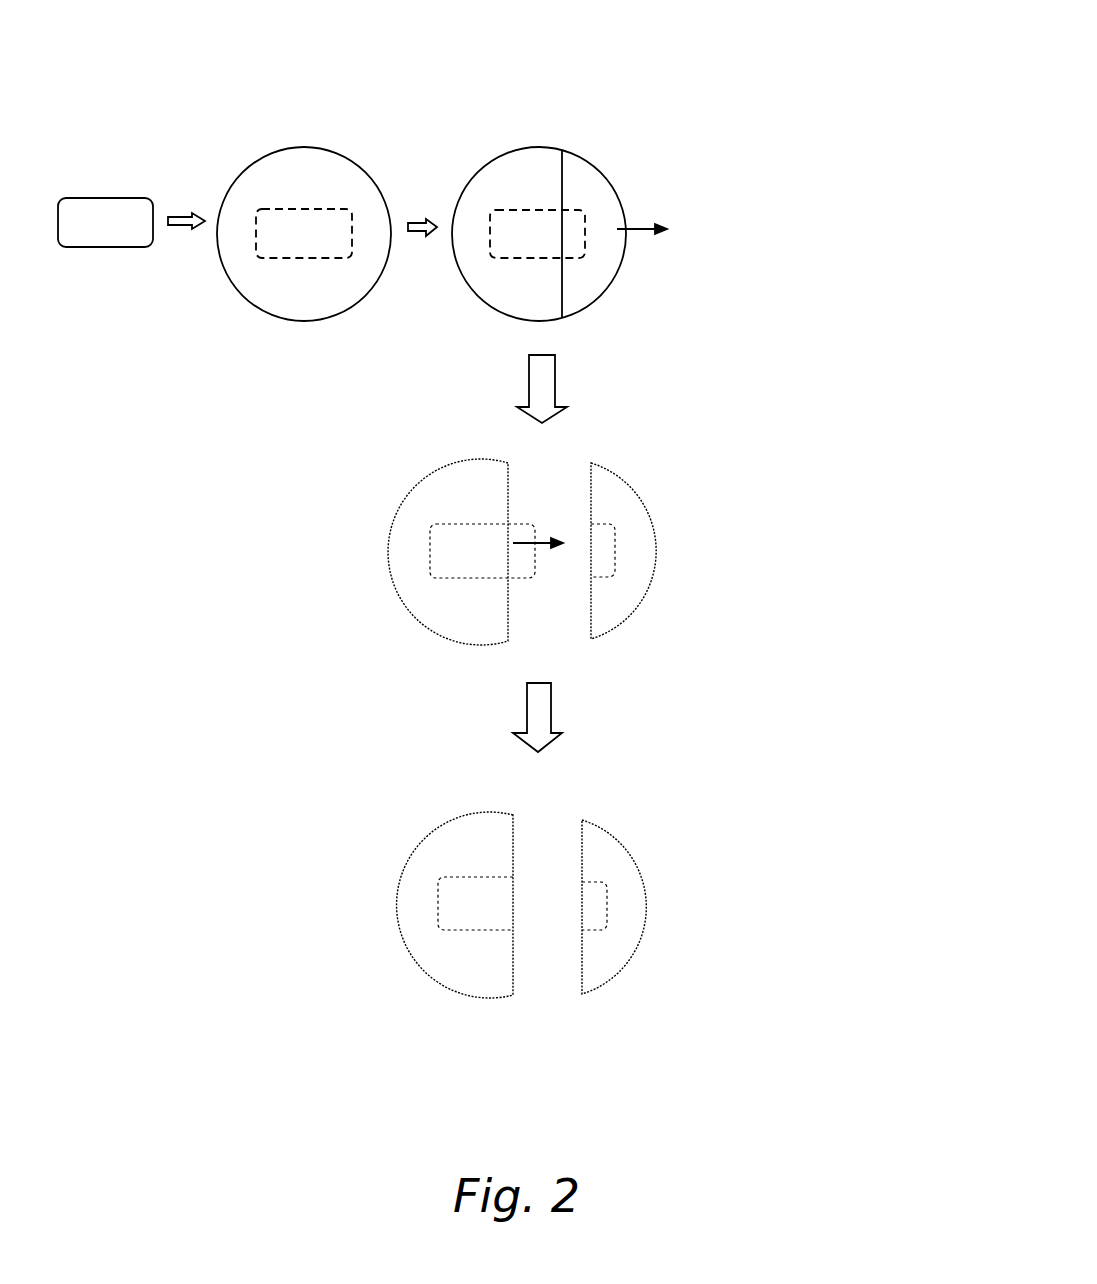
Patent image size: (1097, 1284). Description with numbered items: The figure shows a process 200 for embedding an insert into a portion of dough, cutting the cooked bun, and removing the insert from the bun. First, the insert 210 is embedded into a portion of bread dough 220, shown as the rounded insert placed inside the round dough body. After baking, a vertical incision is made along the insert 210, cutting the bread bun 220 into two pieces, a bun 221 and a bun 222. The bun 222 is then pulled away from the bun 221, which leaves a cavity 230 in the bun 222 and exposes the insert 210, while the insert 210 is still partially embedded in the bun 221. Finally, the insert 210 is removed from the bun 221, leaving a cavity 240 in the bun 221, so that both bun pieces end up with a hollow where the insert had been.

The method of forming an encapsulated electronic device 200 is at (762, 97).
The insert 210 is at (100, 198).
The bread dough 220 is at (280, 148).
The bun 221 is at (475, 173).
The bun 222 is at (582, 160).
The cavity 230 is at (605, 577).
The cavity 240 is at (450, 930).